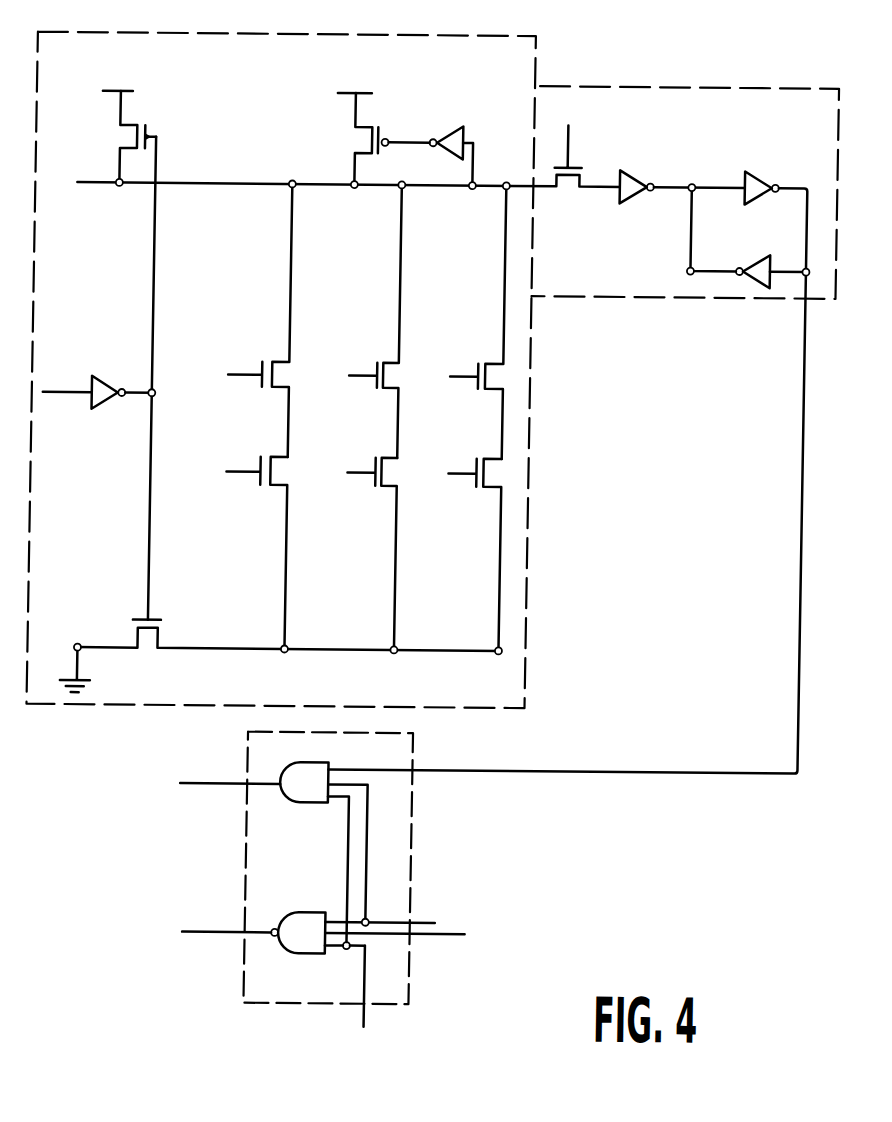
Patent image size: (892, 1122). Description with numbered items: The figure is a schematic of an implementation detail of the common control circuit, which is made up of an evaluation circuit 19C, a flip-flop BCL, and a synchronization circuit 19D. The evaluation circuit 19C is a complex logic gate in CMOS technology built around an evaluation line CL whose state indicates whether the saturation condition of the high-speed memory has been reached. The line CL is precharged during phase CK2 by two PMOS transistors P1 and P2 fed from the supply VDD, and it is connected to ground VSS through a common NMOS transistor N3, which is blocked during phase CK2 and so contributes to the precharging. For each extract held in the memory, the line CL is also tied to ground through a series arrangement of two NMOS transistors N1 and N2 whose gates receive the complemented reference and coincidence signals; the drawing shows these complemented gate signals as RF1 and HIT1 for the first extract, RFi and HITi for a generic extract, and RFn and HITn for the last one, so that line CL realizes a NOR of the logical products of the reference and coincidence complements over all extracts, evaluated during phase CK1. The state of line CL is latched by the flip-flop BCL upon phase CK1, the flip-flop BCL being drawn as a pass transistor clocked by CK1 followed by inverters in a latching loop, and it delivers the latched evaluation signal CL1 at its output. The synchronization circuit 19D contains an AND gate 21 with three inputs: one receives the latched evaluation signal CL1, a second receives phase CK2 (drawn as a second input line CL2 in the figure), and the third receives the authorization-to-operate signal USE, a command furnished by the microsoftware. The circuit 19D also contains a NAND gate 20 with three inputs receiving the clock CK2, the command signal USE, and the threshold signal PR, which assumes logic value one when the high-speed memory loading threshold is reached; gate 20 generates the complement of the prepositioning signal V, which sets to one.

The evaluation circuit 19C is at (527, 631).
The synchronization circuit 19D is at (417, 842).
The NAND gate 20 is at (320, 956).
The AND gate 21 is at (288, 800).
The NMOS transistor N1 is at (408, 385).
The NMOS transistor N2 is at (410, 493).
The common NMOS transistor N3 is at (174, 635).
The PMOS transistor P1 is at (102, 145).
The PMOS transistor P2 is at (335, 144).
The flip-flop BCL is at (746, 85).
The evaluation line CL is at (192, 184).
The latched evaluation signal CL1 is at (800, 629).
The second compare line input CL2 is at (204, 780).
The phase CK1 is at (561, 139).
The phase CK2 is at (64, 397).
The reference signal RF1 is at (241, 374).
The reference signal RFi is at (361, 374).
The reference signal RFn is at (461, 374).
The coincidence signal HIT1 is at (245, 472).
The coincidence signal HITi is at (361, 471).
The coincidence signal HITn is at (452, 470).
The supply voltage VDD is at (242, 74).
The ground VSS is at (71, 643).
The prepositioning signal V is at (215, 930).
The threshold signal PR is at (439, 937).
The authorization-to-operate signal USE is at (369, 1016).